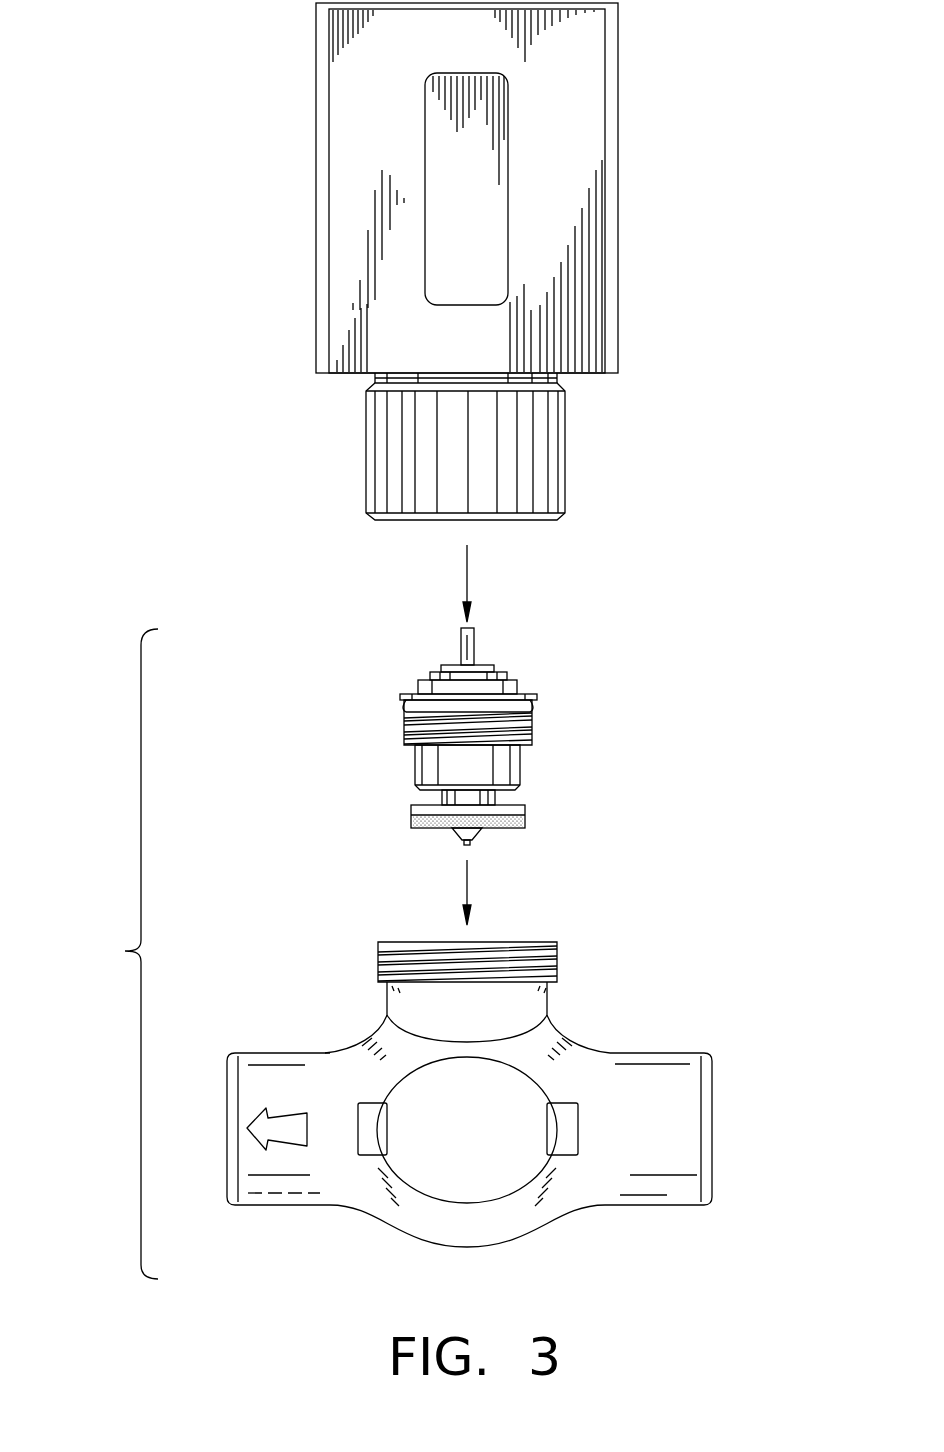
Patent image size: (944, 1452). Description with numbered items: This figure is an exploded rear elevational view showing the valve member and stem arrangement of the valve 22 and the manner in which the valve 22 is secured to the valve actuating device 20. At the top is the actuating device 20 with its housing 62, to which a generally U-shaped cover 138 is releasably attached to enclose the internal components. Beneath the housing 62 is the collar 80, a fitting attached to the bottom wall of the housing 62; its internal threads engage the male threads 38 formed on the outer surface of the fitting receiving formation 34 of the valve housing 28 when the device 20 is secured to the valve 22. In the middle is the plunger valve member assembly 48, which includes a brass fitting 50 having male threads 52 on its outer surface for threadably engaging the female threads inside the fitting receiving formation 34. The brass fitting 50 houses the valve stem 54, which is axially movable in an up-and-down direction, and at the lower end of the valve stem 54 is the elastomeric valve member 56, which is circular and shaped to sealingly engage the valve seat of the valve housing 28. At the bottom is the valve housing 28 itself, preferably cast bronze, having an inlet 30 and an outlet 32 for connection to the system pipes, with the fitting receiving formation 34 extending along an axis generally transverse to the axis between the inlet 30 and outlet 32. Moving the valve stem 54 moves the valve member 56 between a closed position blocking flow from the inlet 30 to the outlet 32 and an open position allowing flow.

The valve actuating device 20 is at (722, 184).
The housing 62 is at (640, 79).
The cover 138 is at (316, 78).
The collar 80 is at (548, 440).
The valve stem 54 is at (470, 646).
The plunger valve member assembly 48 is at (388, 712).
The male threads 52 is at (478, 737).
The brass fitting 50 is at (428, 762).
The valve member 56 is at (525, 820).
The valve 22 is at (103, 972).
The male threads 38 is at (555, 950).
The fitting receiving formation 34 is at (428, 1003).
The valve housing 28 is at (352, 1232).
The outlet 32 is at (226, 1150).
The inlet 30 is at (712, 1122).